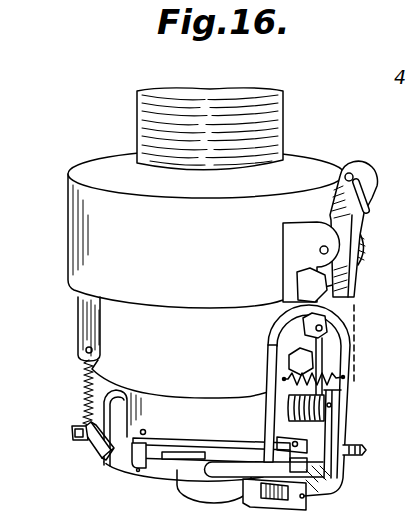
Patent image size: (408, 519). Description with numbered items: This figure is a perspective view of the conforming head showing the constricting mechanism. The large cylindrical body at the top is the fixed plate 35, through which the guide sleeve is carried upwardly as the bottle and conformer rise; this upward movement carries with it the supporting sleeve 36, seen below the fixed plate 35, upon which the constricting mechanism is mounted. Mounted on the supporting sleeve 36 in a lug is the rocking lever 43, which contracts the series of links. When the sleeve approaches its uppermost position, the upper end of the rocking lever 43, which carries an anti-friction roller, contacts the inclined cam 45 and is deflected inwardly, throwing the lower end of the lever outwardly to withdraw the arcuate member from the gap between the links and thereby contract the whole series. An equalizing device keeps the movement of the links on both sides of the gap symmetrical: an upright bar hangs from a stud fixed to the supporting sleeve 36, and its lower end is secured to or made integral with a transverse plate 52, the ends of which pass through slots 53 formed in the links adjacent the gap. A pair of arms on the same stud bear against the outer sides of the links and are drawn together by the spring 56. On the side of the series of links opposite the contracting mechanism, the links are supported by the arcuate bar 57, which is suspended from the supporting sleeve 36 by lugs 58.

The fixed plate 35 is at (97, 163).
The supporting sleeve 36 is at (95, 312).
The rocking lever 43 is at (358, 291).
The inclined cam 45 is at (365, 160).
The transverse plate 52 is at (385, 428).
The slots 53 is at (167, 461).
The spring 56 is at (319, 377).
The arcuate bar 57 is at (92, 444).
The lugs 58 is at (70, 375).